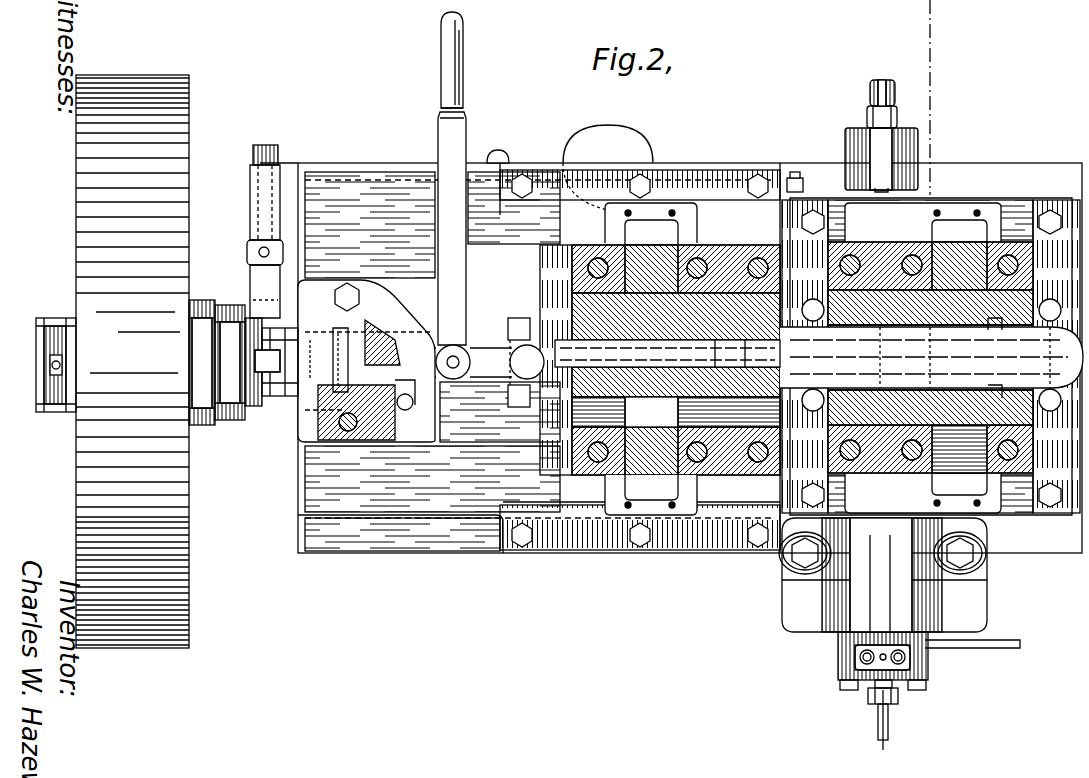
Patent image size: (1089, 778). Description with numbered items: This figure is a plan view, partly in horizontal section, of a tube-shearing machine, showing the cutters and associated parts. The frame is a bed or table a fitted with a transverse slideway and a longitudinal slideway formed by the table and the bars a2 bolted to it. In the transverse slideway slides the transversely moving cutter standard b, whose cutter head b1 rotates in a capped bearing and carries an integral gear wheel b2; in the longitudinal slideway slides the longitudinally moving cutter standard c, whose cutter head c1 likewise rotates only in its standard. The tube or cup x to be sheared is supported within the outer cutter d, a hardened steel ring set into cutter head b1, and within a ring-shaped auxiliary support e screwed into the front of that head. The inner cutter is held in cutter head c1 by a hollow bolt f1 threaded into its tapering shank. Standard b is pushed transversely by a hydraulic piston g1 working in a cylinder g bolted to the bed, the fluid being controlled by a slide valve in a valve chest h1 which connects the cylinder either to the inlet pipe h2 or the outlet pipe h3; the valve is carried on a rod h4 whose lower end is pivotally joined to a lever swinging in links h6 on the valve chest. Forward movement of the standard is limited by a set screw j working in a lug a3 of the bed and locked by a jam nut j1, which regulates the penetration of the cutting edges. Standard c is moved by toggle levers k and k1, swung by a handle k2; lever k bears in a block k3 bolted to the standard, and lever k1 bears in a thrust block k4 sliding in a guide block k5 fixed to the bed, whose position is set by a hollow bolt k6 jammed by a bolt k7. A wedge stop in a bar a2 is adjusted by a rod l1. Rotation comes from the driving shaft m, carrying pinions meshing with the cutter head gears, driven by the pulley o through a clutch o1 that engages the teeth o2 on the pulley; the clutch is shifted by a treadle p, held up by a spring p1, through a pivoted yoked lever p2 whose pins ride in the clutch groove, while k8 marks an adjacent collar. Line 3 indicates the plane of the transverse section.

The bed or table a is at (671, 358).
The bars a2 is at (789, 361).
The lug a3 is at (845, 140).
The transversely moving cutter standard b is at (930, 344).
The cutter head b1 is at (930, 357).
The gear wheel b2 is at (955, 235).
The longitudinally moving cutter standard c is at (660, 360).
The cutter head c1 is at (676, 360).
The outer cutter d is at (931, 330).
The ring-shaped piece e is at (999, 351).
The bolt f1 is at (612, 338).
The cylinder g is at (884, 575).
The hydraulic piston g1 is at (975, 528).
The valve chest h1 is at (838, 665).
The inlet pipe h2 is at (890, 722).
The outlet pipe h3 is at (995, 650).
The rod h4 is at (878, 680).
The links h6 is at (898, 700).
The set screw j is at (870, 92).
The jam nut j1 is at (900, 118).
The toggle lever k is at (453, 362).
The toggle lever k1 is at (392, 359).
The actuating handle k2 is at (462, 178).
The block k3 is at (526, 362).
The thrust block k4 is at (359, 380).
The guide block k5 is at (366, 348).
The hollow bolt k6 is at (330, 350).
The bolt k7 is at (420, 395).
The clutch collar k8 is at (255, 358).
The rod l1 is at (793, 172).
The driving shaft m is at (36, 362).
The driving pulley o is at (132, 361).
The clutch o1 is at (232, 422).
The teeth o2 is at (198, 428).
The treadle p is at (575, 148).
The spring p1 is at (500, 152).
The pivoted lever p2 is at (250, 243).
The tube x is at (1053, 340).
The section line 3 is at (904, 384).